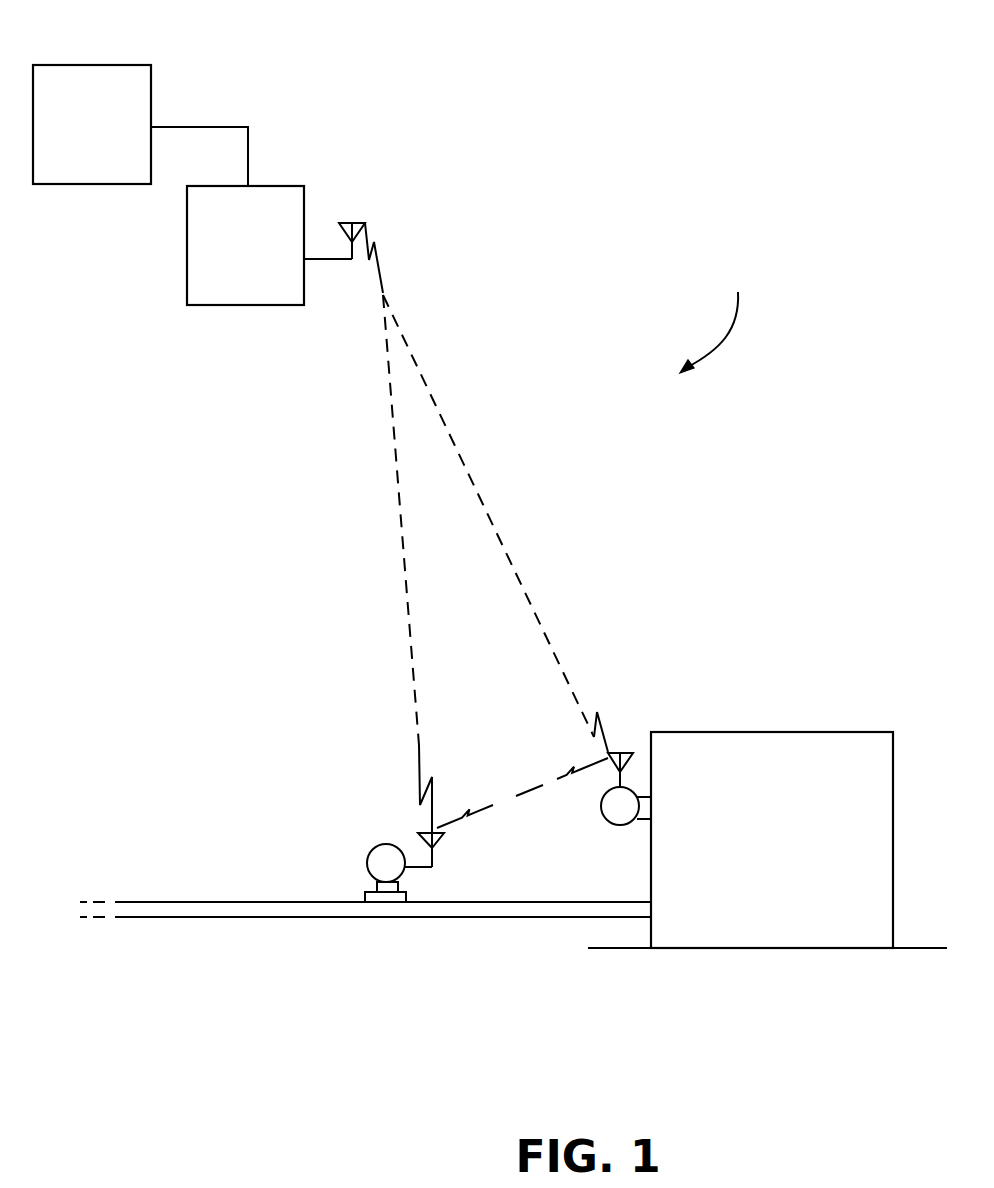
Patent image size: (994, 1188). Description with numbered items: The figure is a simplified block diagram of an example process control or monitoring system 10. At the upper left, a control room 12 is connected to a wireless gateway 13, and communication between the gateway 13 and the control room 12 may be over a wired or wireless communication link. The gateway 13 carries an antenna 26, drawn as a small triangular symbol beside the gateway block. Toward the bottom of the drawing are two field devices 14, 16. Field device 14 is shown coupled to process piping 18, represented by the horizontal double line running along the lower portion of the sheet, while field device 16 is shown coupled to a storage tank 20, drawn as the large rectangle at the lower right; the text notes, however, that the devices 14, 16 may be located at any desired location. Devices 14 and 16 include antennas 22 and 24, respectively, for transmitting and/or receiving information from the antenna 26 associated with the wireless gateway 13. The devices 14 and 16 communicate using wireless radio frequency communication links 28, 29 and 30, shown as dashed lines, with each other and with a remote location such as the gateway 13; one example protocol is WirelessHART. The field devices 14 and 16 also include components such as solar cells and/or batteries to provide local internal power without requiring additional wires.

The process control or monitoring system 10 is at (716, 320).
The control room 12 is at (79, 135).
The wireless gateway 13 is at (257, 306).
The field device 14 is at (370, 855).
The field device 16 is at (600, 813).
The process piping 18 is at (290, 914).
The storage tank 20 is at (752, 745).
The antenna 22 is at (440, 840).
The antenna 24 is at (607, 757).
The antenna 26 is at (364, 223).
The wireless radio frequency communication link 28 is at (402, 562).
The wireless radio frequency communication link 29 is at (523, 796).
The wireless radio frequency communication link 30 is at (505, 540).